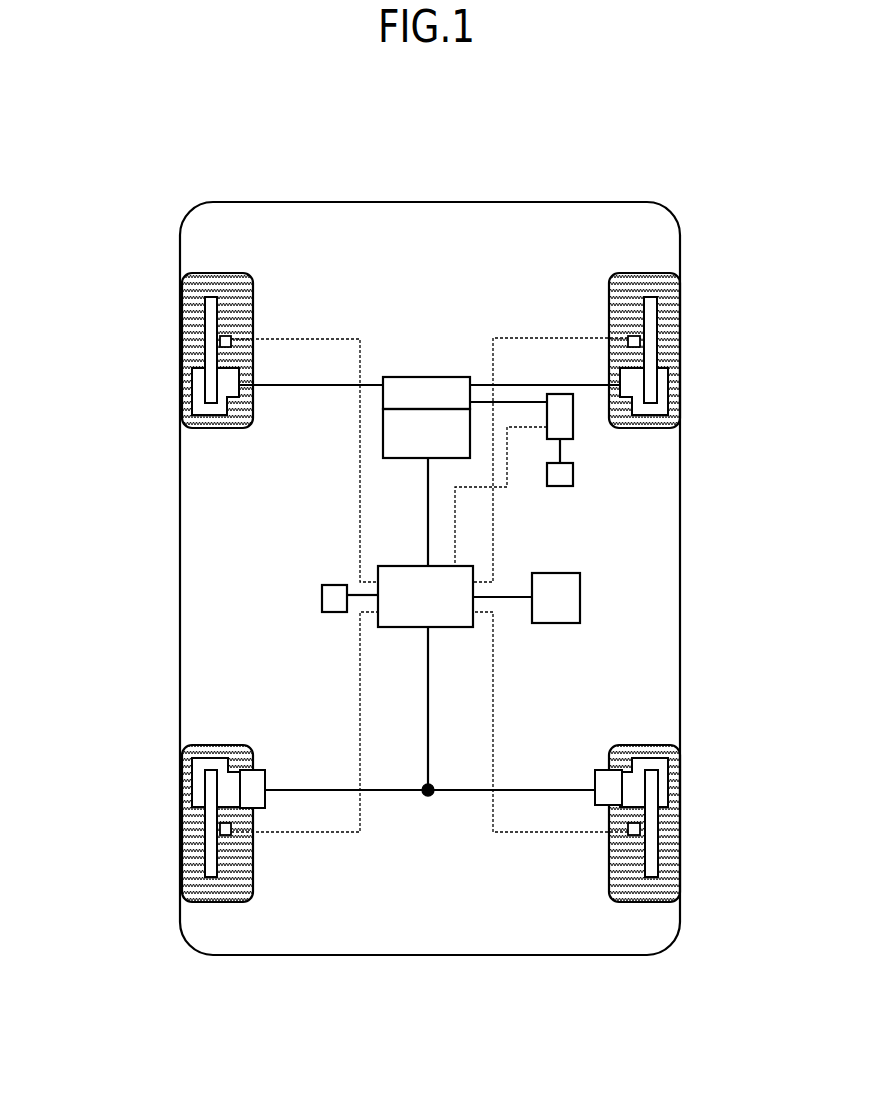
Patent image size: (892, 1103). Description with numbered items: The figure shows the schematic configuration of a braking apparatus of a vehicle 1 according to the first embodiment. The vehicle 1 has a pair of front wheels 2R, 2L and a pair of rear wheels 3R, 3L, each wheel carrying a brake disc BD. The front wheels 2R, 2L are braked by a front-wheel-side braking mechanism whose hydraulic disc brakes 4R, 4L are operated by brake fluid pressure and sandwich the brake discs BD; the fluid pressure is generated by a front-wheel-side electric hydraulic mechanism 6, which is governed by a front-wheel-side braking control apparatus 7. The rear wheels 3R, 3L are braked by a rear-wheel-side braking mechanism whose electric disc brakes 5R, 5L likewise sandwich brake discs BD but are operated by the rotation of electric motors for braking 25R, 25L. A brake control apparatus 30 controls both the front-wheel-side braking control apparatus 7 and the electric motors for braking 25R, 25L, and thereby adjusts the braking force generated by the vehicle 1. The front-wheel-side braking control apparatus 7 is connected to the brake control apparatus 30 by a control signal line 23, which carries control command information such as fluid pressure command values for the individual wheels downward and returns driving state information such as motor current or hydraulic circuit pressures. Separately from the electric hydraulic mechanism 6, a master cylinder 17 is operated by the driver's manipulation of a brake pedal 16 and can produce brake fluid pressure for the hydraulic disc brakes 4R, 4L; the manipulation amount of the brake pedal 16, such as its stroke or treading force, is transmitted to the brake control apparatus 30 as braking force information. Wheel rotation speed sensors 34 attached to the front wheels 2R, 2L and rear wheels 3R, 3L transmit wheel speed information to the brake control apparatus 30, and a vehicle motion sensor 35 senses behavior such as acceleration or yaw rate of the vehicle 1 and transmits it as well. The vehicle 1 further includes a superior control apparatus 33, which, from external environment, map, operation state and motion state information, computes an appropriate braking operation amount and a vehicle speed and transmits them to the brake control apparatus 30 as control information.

The vehicle 1 is at (178, 208).
The front wheel 2L is at (182, 283).
The front wheel 2R is at (680, 283).
The rear wheel 3L is at (182, 880).
The rear wheel 3R is at (680, 875).
The hydraulic disc brake 4L is at (182, 390).
The hydraulic disc brake 4R is at (680, 392).
The electric disc brake 5L is at (195, 778).
The electric disc brake 5R is at (665, 773).
The brake disc BD is at (182, 338).
The front-wheel-side electric hydraulic mechanism 6 is at (426, 375).
The front-wheel-side braking control apparatus 7 is at (383, 436).
The brake pedal 16 is at (573, 478).
The master cylinder 17 is at (573, 430).
The control signal line 23 is at (427, 510).
The electric motor for braking 25L is at (255, 770).
The electric motor for braking 25R is at (608, 770).
The brake control apparatus 30 is at (445, 628).
The superior control apparatus 33 is at (581, 600).
The wheel rotation speed sensor 34 is at (225, 337).
The vehicle motion sensor 35 is at (321, 597).